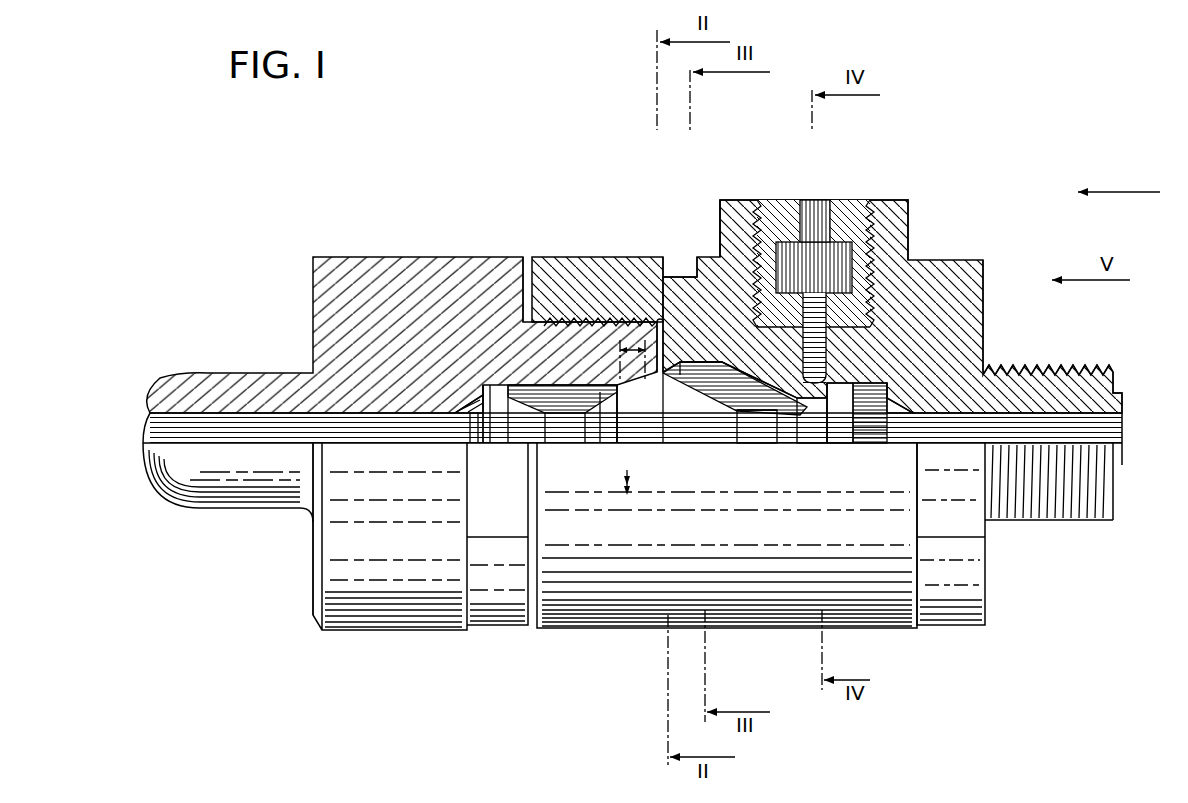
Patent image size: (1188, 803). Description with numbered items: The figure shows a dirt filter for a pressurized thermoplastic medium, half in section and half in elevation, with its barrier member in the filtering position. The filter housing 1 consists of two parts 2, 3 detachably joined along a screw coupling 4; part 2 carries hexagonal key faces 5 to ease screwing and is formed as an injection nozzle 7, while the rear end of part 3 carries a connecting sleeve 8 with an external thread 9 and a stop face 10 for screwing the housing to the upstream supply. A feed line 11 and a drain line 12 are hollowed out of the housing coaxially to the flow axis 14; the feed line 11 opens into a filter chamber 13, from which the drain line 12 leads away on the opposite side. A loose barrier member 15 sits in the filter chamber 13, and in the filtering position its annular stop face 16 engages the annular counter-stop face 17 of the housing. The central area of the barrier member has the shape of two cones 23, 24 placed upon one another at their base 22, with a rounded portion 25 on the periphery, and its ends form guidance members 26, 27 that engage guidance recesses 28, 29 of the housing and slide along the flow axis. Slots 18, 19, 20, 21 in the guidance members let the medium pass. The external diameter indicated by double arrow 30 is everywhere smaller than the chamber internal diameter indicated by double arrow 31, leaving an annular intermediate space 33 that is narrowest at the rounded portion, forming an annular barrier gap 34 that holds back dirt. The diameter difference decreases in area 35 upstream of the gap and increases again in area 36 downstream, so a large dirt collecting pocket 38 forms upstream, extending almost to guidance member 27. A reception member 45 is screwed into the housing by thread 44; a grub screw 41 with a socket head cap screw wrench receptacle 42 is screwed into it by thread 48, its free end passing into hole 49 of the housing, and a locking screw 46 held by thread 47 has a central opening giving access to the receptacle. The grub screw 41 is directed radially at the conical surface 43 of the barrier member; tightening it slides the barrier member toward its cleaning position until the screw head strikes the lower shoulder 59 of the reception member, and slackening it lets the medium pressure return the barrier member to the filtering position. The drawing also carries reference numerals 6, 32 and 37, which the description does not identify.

The filter housing 1 is at (573, 252).
The housing part 2 is at (462, 265).
The housing part 3 is at (968, 292).
The screw coupling 4 is at (560, 330).
The hexagonal key faces 5 is at (493, 622).
The sleeve body 6 is at (975, 568).
The injection nozzle 7 is at (160, 440).
The connecting sleeve 8 is at (1030, 390).
The external thread 9 is at (1068, 372).
The stop face 10 is at (986, 345).
The feed line 11 is at (1062, 450).
The drain line 12 is at (217, 433).
The filter chamber 13 is at (728, 432).
The flow axis 14 is at (1095, 440).
The barrier member 15 is at (313, 595).
The annular stop face 16 is at (483, 390).
The counter-stop face 17 is at (482, 400).
The slot 18 is at (835, 440).
The slot 19 is at (798, 440).
The slot 20 is at (467, 447).
The slot 21 is at (490, 447).
The base 22 is at (674, 440).
The cone 23 is at (650, 440).
The cone 24 is at (722, 432).
The rounded portion 25 is at (663, 440).
The guidance member 26 is at (495, 395).
The guidance member 27 is at (850, 432).
The guidance recess 28 is at (553, 442).
The guidance recess 29 is at (895, 405).
The double arrow 30 is at (618, 440).
The double arrow 31 is at (602, 440).
The cap 32 is at (885, 202).
The annular intermediate space 33 is at (533, 385).
The annular barrier gap 34 is at (657, 318).
The area upstream of the barrier gap 35 is at (692, 252).
The area downstream of the barrier gap 36 is at (612, 392).
The flow direction 37 is at (1119, 180).
The dirt collecting pocket 38 is at (735, 432).
The grub screw 41 is at (818, 215).
The socket head cap screw wrench receptacle 42 is at (808, 300).
The conical surface 43 is at (840, 432).
The thread 44 is at (830, 370).
The reception member 45 is at (748, 300).
The locking screw 46 is at (862, 300).
The thread 47 is at (790, 243).
The thread 48 is at (775, 300).
The hole 49 is at (880, 383).
The lower shoulder 59 is at (752, 432).